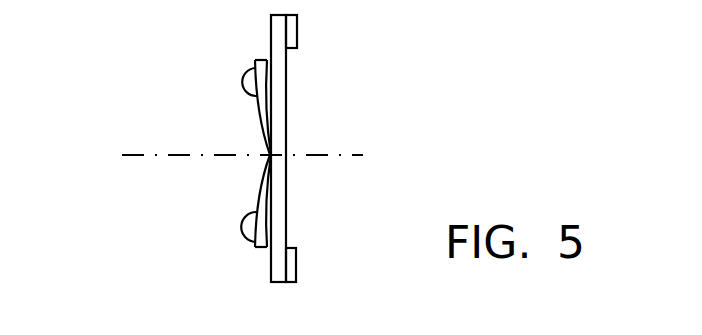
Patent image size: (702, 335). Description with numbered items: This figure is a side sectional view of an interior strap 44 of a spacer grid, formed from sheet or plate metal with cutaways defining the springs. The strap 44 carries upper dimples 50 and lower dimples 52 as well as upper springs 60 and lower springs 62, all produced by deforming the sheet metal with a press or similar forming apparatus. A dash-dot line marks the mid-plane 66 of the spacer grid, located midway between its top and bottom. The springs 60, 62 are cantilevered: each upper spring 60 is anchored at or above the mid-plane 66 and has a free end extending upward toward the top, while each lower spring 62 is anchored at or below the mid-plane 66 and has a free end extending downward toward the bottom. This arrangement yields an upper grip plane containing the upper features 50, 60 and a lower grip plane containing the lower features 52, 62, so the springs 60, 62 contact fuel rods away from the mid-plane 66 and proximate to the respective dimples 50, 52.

The interior strap 44 is at (178, 215).
The upper dimples 50 is at (297, 33).
The lower dimples 52 is at (297, 249).
The upper springs 60 is at (242, 79).
The lower springs 62 is at (249, 219).
The mid-plane 66 is at (323, 158).